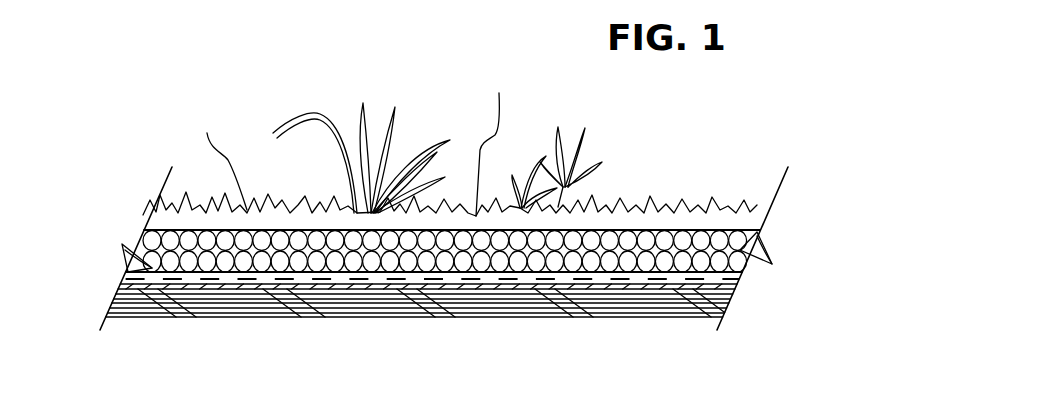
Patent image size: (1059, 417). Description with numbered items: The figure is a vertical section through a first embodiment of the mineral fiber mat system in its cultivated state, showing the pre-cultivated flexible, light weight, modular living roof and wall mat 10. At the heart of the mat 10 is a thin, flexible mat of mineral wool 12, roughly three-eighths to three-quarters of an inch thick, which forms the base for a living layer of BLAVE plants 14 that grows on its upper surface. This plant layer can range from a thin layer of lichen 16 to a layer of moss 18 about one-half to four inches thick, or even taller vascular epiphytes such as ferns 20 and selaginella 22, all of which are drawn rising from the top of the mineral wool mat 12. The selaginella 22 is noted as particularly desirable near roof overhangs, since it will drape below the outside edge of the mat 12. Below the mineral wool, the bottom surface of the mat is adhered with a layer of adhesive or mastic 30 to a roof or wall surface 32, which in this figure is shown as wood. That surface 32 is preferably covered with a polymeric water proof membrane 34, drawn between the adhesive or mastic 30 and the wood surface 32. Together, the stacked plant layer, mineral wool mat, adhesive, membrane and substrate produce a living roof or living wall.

The living roof and wall mat 10 is at (260, 88).
The mat of mineral wool 12 is at (163, 243).
The living layer of BLAVE plants 14 is at (178, 222).
The lichen 16 is at (516, 144).
The moss 18 is at (219, 158).
The ferns 20 is at (366, 108).
The selaginella 22 is at (587, 140).
The adhesive or mastic 30 is at (130, 277).
The roof or wall surface 32 is at (670, 310).
The polymeric water proof membrane 34 is at (738, 285).